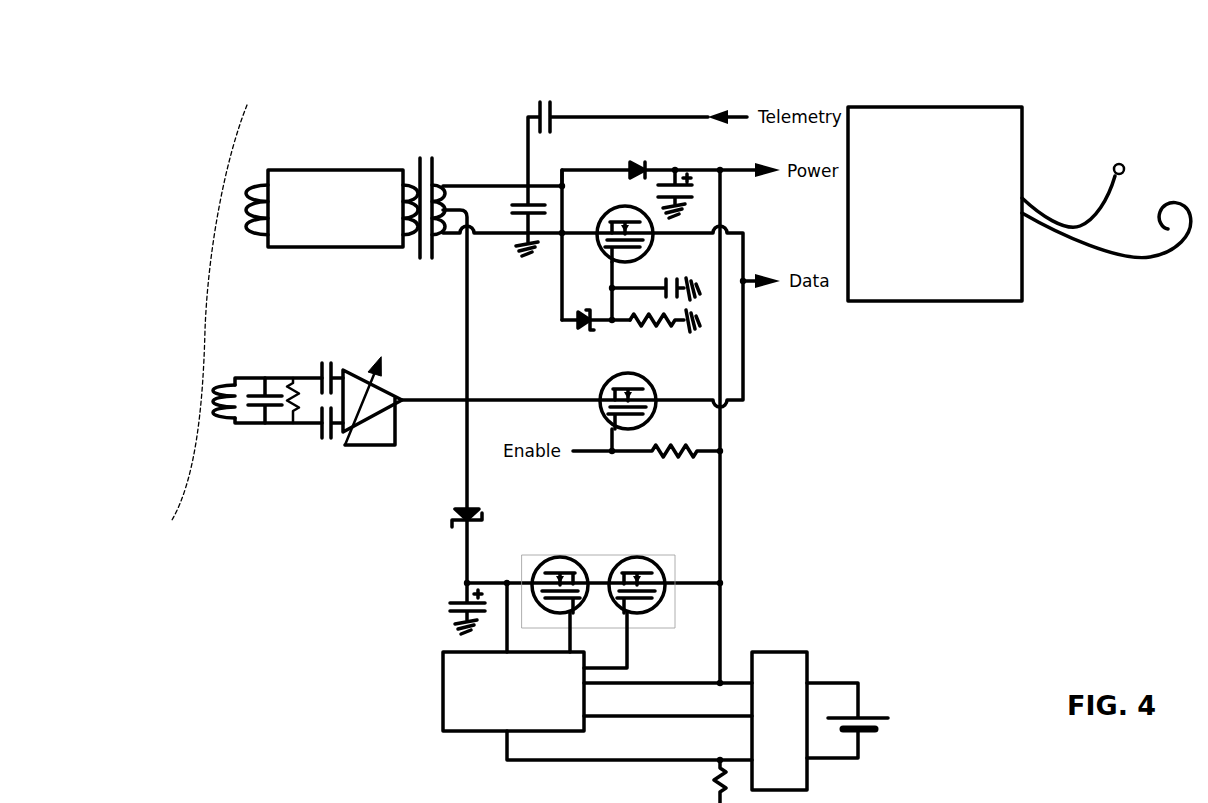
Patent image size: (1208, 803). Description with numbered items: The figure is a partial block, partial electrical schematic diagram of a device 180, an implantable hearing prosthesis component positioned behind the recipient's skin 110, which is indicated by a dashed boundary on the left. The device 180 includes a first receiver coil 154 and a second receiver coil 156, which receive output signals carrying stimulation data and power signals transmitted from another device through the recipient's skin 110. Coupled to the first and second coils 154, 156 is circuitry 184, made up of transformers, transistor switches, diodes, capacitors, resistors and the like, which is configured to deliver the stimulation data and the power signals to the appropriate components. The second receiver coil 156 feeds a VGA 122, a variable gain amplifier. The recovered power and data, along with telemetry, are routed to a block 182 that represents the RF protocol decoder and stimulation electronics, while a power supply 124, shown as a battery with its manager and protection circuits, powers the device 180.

The recipient's skin 110 is at (228, 120).
The circuitry 184 is at (358, 124).
The first receiver coil 154 is at (258, 236).
The VGA 122 is at (350, 370).
The second receiver coil 156 is at (220, 423).
The block 182 is at (938, 301).
The device 180 is at (929, 549).
The power supply 124 is at (885, 722).